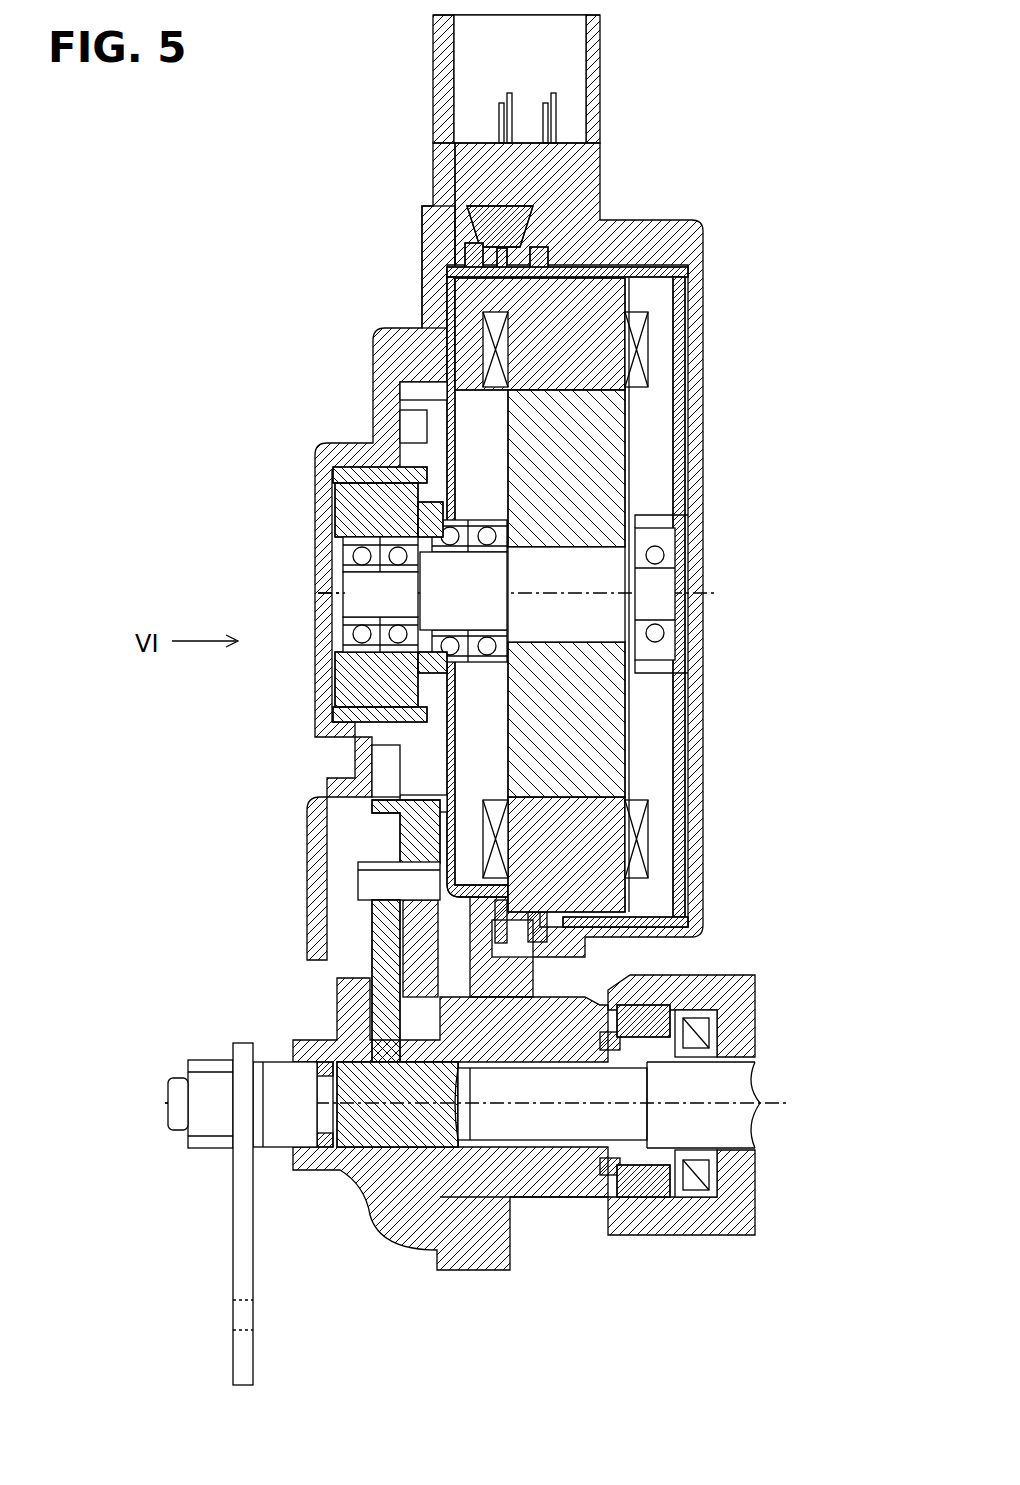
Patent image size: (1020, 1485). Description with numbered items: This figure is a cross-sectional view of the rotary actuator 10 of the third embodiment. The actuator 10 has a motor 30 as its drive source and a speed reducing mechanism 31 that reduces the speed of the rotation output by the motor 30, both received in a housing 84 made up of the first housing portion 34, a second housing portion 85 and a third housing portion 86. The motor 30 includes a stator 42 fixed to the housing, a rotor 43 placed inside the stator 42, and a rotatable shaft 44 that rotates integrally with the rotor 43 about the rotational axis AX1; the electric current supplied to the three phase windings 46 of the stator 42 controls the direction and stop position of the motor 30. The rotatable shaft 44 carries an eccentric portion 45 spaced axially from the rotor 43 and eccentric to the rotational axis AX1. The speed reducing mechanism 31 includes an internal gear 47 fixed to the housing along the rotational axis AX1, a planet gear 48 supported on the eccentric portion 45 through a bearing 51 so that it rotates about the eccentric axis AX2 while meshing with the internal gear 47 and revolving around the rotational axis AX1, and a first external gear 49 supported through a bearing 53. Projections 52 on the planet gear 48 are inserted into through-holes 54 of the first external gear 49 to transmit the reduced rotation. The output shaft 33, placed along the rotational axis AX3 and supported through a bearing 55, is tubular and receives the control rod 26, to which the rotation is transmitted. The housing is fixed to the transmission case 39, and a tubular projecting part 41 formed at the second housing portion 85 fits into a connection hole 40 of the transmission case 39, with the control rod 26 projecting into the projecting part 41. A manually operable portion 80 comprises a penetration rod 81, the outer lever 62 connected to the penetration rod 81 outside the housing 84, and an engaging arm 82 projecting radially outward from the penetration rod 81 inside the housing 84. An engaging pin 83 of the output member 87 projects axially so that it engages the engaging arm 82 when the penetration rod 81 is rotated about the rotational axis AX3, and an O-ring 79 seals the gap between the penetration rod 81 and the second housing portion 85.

The actuator 10 is at (388, 88).
The control rod 26 is at (720, 1088).
The motor 30 is at (768, 348).
The speed reducing mechanism 31 is at (418, 376).
The output shaft 33 is at (498, 1170).
The first housing portion 34 is at (690, 242).
The transmission case 39 is at (735, 998).
The connection hole 40 is at (648, 1030).
The projecting part 41 is at (640, 1200).
The stator 42 is at (590, 365).
The rotor 43 is at (588, 440).
The rotatable shaft 44 is at (565, 620).
The eccentric portion 45 is at (448, 575).
The three phase windings 46 is at (637, 330).
The internal gear 47 is at (455, 335).
The planet gear 48 is at (448, 688).
The first external gear 49 is at (432, 760).
The bearing 51 is at (490, 535).
The projections 52 is at (440, 430).
The bearing 53 is at (398, 470).
The through-holes 54 is at (425, 443).
The bearing 55 is at (545, 1187).
The outer lever 62 is at (238, 1190).
The O-ring 79 is at (325, 1150).
The manually operable portion 80 is at (138, 960).
The penetration rod 81 is at (283, 1082).
The engaging arm 82 is at (380, 950).
The engaging pin 83 is at (370, 885).
The housing 84 is at (626, 214).
The second housing portion 85 is at (435, 228).
The third housing portion 86 is at (487, 222).
The output member 87 is at (415, 835).
The rotational axis AX1 is at (690, 590).
The eccentric axis AX2 is at (340, 587).
The rotational axis AX3 is at (750, 1122).